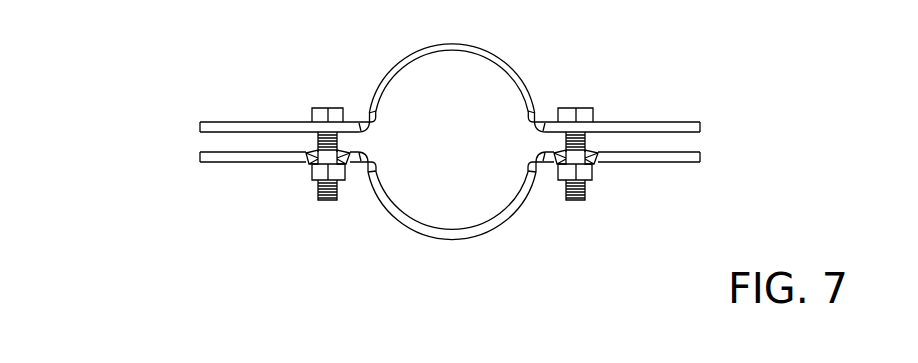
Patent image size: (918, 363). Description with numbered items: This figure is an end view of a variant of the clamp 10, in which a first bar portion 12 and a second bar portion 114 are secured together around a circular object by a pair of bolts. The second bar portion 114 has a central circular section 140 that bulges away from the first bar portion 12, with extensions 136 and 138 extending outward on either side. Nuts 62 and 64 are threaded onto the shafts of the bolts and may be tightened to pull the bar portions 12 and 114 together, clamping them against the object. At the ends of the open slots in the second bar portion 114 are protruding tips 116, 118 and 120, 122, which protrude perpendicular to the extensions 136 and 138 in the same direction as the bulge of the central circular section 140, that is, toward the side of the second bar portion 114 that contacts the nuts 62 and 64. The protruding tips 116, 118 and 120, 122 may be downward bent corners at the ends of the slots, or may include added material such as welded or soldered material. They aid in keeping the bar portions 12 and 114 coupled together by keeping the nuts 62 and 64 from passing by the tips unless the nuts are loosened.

The clamp 10 is at (165, 120).
The first bar portion 12 is at (207, 115).
The second bar portion 114 is at (415, 210).
The extension 136 is at (227, 163).
The extension 138 is at (685, 163).
The central circular section 140 is at (452, 240).
The protruding tip 116 is at (308, 163).
The protruding tip 118 is at (355, 163).
The nut 62 is at (345, 165).
The protruding tip 120 is at (557, 163).
The protruding tip 122 is at (593, 162).
The nut 64 is at (582, 174).